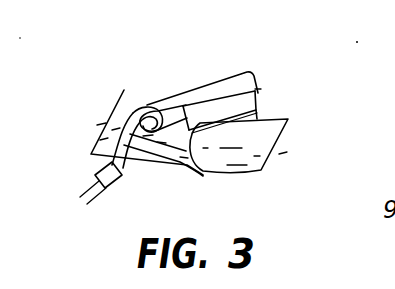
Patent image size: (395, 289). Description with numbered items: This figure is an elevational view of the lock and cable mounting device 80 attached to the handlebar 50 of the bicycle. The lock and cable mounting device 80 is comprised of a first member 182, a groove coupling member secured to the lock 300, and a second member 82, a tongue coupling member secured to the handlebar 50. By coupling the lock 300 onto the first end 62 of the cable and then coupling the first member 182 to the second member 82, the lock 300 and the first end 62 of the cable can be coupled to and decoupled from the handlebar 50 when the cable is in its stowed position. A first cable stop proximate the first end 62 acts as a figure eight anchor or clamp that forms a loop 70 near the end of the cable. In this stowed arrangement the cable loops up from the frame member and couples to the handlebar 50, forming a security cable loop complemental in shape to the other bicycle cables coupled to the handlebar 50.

The handlebar 50 is at (240, 163).
The first end of the cable 62 is at (128, 107).
The loop 70 is at (110, 124).
The lock and cable mounting device 80 is at (198, 116).
The second member 82 is at (257, 116).
The first member 182 is at (257, 96).
The lock 300 is at (217, 80).